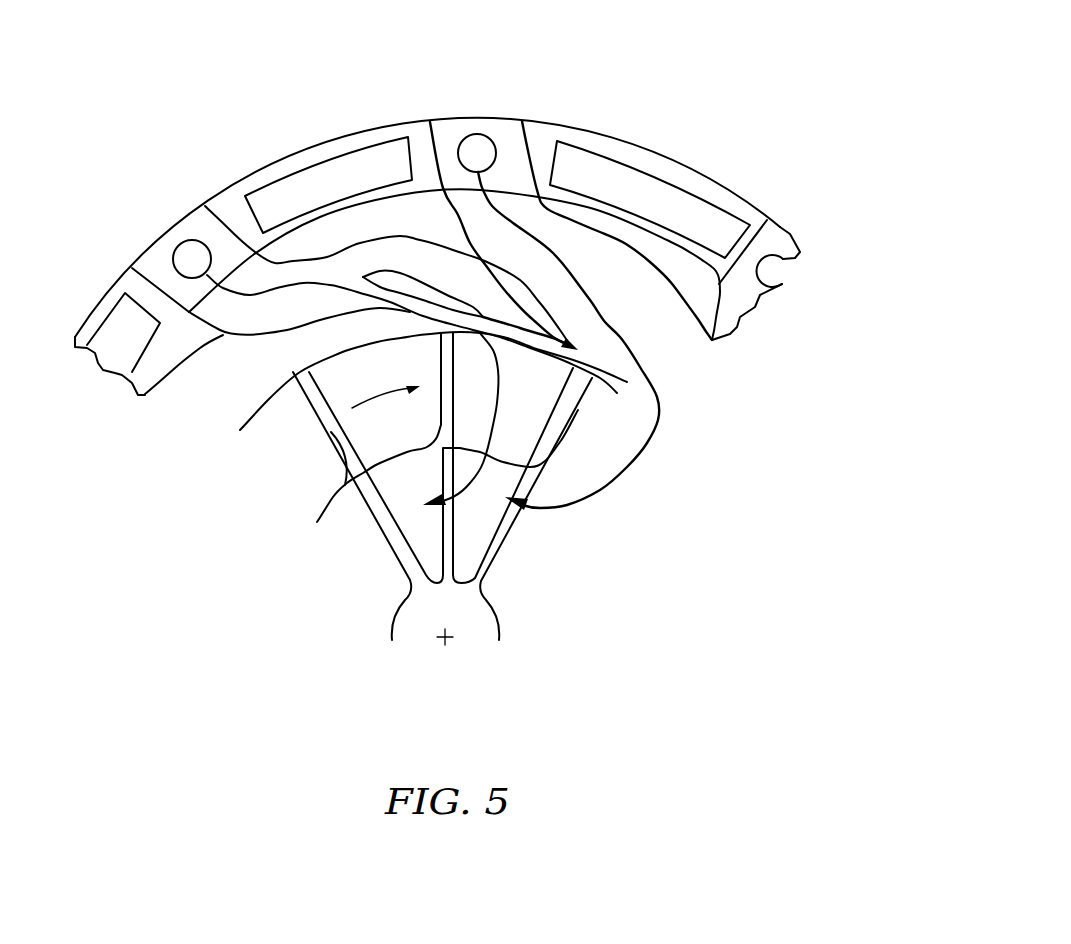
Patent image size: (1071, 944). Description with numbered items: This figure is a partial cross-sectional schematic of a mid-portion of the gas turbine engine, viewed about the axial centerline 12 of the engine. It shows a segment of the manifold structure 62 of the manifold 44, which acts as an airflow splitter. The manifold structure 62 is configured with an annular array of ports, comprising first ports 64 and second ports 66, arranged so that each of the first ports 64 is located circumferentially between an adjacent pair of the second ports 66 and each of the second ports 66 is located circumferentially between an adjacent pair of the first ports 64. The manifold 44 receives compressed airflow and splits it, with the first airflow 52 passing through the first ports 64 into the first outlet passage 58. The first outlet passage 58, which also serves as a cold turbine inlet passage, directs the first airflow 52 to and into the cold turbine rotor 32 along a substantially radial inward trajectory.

The axial centerline 12 is at (452, 646).
The cold turbine rotor 32 is at (358, 552).
The manifold 44 is at (652, 72).
The first airflow 52 is at (497, 393).
The first outlet passage 58 is at (240, 317).
The manifold structure 62 is at (745, 200).
The first ports 64 is at (187, 241).
The second ports 66 is at (110, 318).